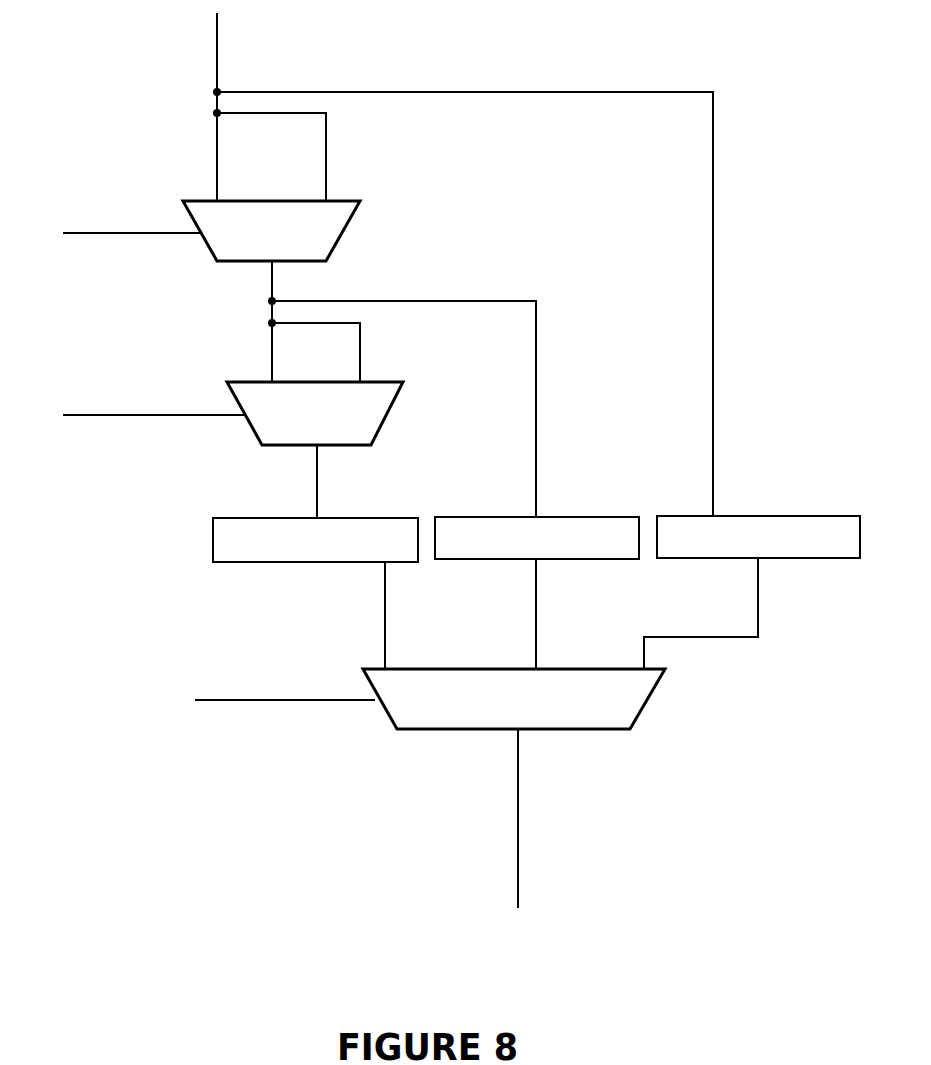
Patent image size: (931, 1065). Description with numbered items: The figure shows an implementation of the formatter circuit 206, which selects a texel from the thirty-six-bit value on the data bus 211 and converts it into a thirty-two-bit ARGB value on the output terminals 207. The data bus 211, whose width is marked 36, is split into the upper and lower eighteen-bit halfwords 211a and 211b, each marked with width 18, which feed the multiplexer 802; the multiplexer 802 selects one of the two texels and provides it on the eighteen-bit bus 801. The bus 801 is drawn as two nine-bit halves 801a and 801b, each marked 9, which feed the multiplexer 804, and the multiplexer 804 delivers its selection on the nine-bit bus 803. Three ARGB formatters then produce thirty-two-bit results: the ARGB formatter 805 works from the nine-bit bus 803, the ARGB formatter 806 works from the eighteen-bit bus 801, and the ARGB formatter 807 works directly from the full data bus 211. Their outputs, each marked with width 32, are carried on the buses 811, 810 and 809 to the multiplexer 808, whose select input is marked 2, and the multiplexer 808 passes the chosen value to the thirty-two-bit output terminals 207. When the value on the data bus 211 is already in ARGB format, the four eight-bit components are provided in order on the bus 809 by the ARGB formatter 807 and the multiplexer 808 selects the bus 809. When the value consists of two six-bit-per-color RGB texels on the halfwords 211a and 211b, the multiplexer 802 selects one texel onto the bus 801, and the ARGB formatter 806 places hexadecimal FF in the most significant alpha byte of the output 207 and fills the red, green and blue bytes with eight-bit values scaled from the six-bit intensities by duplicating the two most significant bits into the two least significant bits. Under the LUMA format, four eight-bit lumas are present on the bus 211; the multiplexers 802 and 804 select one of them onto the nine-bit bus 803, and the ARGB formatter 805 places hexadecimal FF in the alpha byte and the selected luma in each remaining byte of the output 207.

The formatter circuit 206 is at (130, 50).
The data bus 211 is at (217, 78).
The upper 18-bit halfword 211a is at (217, 186).
The lower 18-bit halfword 211b is at (326, 186).
The multiplexer 802 is at (342, 239).
The 18-bit bus 801 is at (271, 301).
The first 9-bit portion of bus 801 801a is at (271, 341).
The second 9-bit portion of bus 801 801b is at (362, 338).
The multiplexer 804 is at (388, 412).
The 9-bit bus 803 is at (317, 472).
The ARGB formatter 805 is at (213, 542).
The ARGB formatter 806 is at (589, 517).
The ARGB formatter 807 is at (796, 516).
The multiplexer 808 is at (655, 704).
The 32-bit bus 809 is at (727, 640).
The 32-bit bus from converter 806 810 is at (536, 645).
The 32-bit bus from converter 805 811 is at (385, 645).
The output terminals 207 is at (518, 863).
The 36-bit bus width 36 is at (208, 38).
The 18-bit bus width 18 is at (545, 404).
The 9-bit bus width 9 is at (323, 503).
The 32-bit bus width 32 is at (528, 826).
The 2-bit select signal width 2 is at (312, 693).